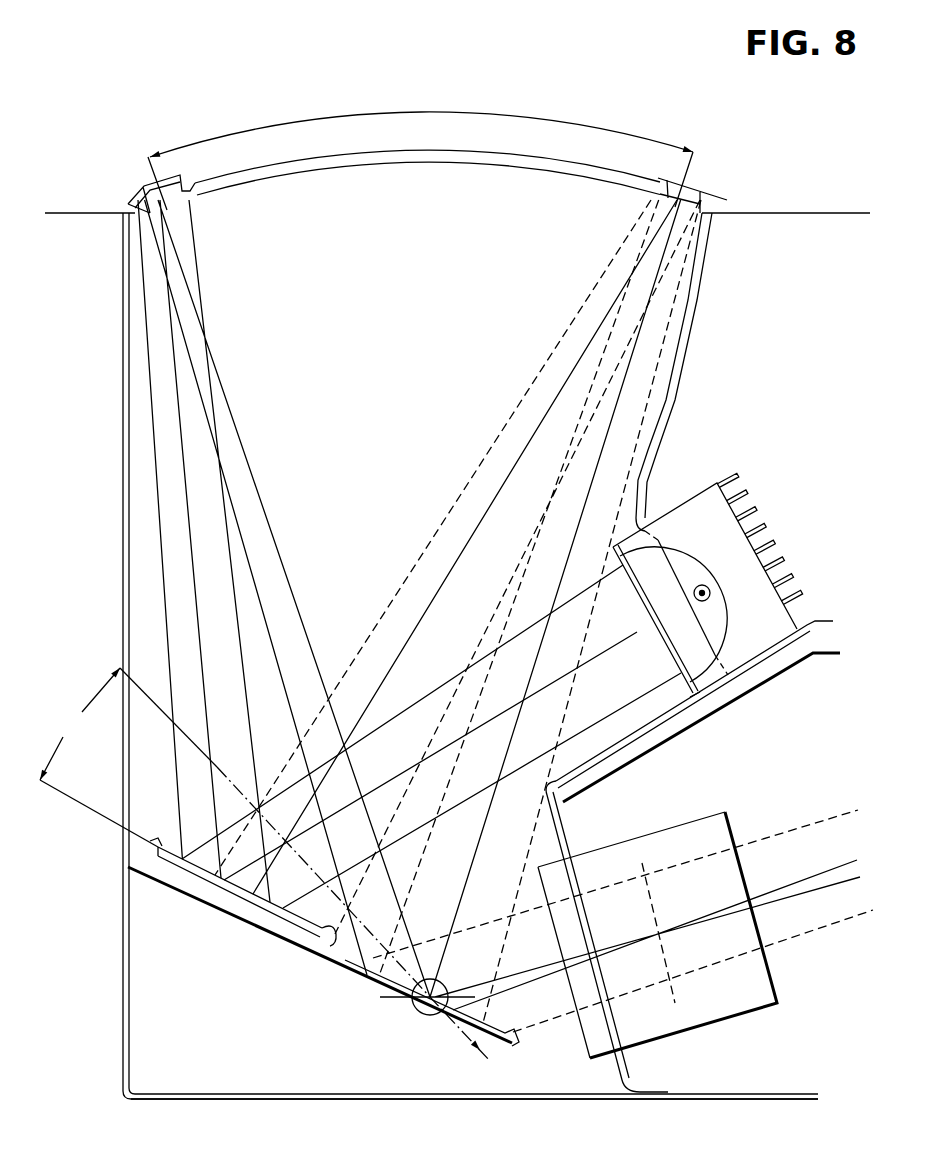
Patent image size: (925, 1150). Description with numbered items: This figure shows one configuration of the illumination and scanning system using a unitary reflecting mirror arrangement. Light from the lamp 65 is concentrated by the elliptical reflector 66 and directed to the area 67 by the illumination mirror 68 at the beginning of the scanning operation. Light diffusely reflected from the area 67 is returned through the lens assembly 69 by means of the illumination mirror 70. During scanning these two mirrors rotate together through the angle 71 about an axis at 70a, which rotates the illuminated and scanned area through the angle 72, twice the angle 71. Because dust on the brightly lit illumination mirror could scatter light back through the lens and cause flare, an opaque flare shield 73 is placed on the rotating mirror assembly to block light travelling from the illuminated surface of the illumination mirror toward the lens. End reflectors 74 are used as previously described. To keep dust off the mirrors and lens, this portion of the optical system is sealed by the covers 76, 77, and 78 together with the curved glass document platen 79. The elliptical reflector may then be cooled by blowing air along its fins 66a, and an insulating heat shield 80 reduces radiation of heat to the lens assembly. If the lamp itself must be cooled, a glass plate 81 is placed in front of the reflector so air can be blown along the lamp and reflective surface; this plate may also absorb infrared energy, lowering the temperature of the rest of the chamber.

The lamp 65 is at (710, 598).
The elliptical reflector 66 is at (668, 557).
The fins 66a is at (724, 473).
The area 67 is at (144, 186).
The illumination mirror 68 is at (233, 893).
The lens assembly 69 is at (757, 1010).
The illumination mirror 70 is at (380, 980).
The axis 70a is at (421, 1010).
The angle 71 is at (80, 724).
The angle 72 is at (420, 150).
The flare shield 73 is at (330, 935).
The end reflectors 74 is at (432, 338).
The cover 76 is at (187, 1096).
The cover 77 is at (625, 1072).
The cover 78 is at (689, 344).
The curved glass document platen 79 is at (259, 186).
The insulating heat shield 80 is at (790, 665).
The glass plate 81 is at (662, 643).